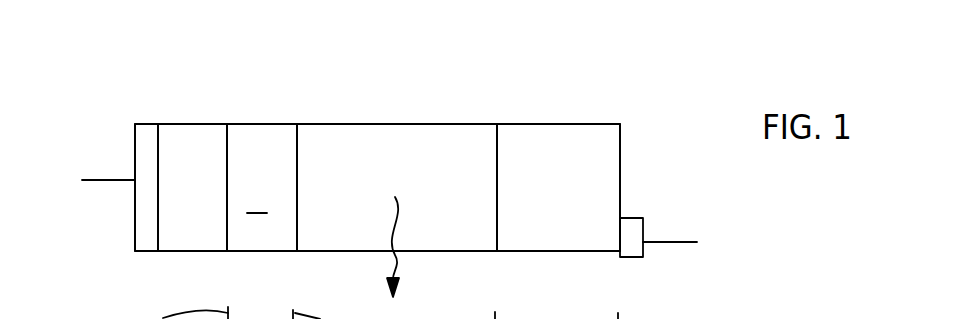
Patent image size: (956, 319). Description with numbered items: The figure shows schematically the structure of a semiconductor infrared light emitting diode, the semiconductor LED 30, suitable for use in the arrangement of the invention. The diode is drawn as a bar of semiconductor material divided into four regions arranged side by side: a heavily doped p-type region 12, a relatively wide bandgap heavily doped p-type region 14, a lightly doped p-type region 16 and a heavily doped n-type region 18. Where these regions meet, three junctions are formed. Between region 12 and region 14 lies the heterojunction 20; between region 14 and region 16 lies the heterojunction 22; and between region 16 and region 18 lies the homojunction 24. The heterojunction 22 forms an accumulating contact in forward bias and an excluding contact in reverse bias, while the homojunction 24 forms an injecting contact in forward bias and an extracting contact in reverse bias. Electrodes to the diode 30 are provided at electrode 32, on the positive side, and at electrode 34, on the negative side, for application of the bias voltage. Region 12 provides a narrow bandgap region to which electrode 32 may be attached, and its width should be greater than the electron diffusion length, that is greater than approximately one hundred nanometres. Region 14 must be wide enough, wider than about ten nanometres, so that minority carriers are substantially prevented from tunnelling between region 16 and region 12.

The heavily doped p-type region 12 is at (170, 132).
The wide bandgap heavily doped p-type region 14 is at (262, 133).
The lightly doped p-type region 16 is at (372, 143).
The heavily doped n-type region 18 is at (538, 142).
The p+p+ heterojunction 20 is at (225, 138).
The p+p- heterojunction 22 is at (300, 143).
The p-n+ homojunction 24 is at (497, 230).
The semiconductor LED 30 is at (582, 108).
The electrode 32 is at (142, 230).
The electrode 34 is at (632, 222).